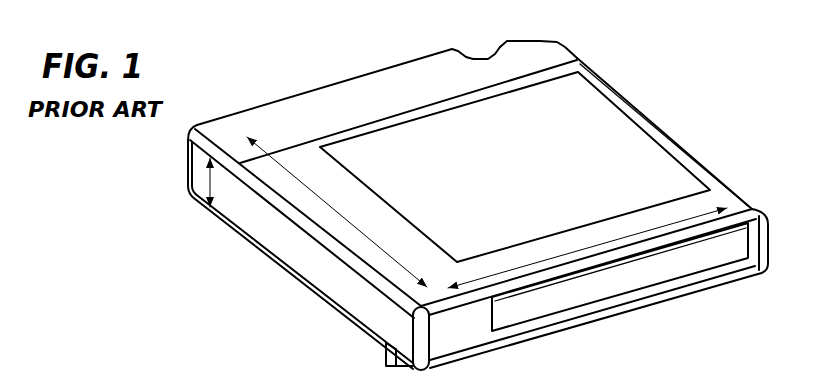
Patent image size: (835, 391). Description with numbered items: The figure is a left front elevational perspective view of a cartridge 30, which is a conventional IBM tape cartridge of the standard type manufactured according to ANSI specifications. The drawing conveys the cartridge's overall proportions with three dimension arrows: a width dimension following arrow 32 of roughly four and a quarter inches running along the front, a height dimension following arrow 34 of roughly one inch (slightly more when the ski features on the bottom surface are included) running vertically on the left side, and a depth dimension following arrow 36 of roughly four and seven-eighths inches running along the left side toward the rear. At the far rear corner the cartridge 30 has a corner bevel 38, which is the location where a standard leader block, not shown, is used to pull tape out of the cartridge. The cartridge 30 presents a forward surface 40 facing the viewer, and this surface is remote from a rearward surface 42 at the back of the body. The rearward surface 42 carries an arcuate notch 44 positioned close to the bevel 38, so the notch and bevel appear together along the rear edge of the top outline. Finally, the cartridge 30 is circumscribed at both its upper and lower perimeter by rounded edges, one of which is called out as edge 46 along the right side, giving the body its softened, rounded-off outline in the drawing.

The cartridge 30 is at (615, 133).
The arrow for width dimension 32 is at (617, 238).
The arrow for height dimension 34 is at (213, 183).
The arrow for depth dimension 36 is at (332, 206).
The corner bevel 38 is at (543, 40).
The forward surface 40 is at (660, 267).
The rearward surface 42 is at (380, 68).
The arcuate notch 44 is at (495, 52).
The rounded edge 46 is at (712, 172).